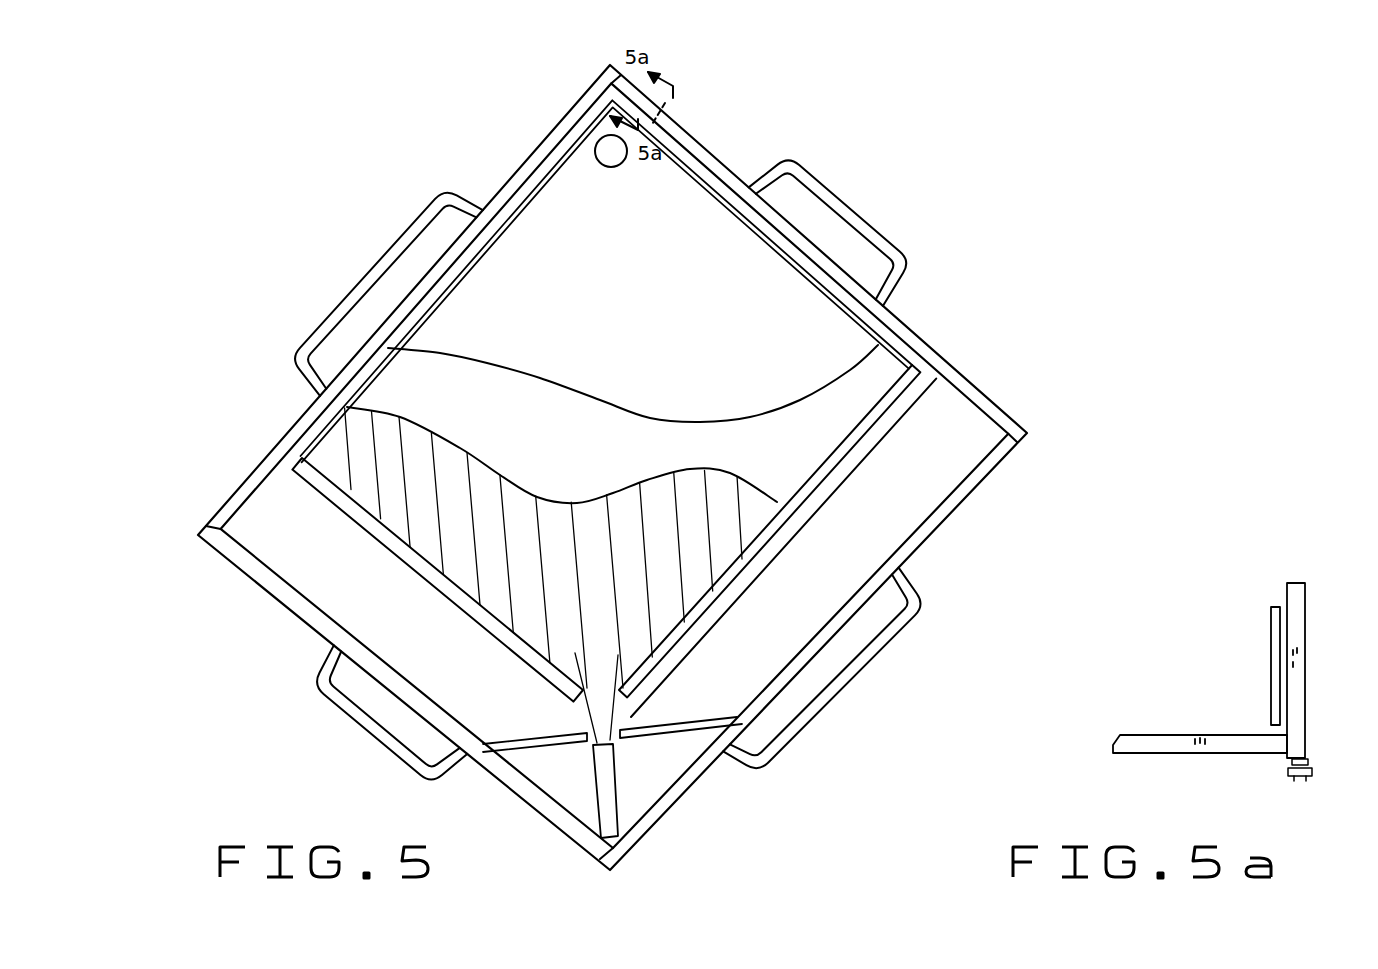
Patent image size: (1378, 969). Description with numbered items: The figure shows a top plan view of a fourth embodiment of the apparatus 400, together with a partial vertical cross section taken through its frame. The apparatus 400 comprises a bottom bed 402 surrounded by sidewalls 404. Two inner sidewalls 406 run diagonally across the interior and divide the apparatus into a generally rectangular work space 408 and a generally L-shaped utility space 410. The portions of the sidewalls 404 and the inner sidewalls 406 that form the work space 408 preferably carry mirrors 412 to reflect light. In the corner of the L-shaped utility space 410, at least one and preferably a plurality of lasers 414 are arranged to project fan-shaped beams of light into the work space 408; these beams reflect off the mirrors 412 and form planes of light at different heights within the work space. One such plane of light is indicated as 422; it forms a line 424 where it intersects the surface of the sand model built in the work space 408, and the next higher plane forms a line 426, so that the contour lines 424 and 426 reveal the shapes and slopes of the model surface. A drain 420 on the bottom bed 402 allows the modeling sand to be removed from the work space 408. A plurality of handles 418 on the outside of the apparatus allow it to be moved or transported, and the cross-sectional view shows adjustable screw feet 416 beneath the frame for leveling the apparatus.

In FIG. 5, the apparatus 400 is at (955, 546).
In FIG. 5, the bottom bed 402 is at (952, 425).
In FIG. 5A, the bottom bed 402 is at (1193, 750).
In FIG. 5, the sidewalls 404 is at (945, 346).
In FIG. 5A, the sidewalls 404 is at (1307, 636).
In FIG. 5, the inner sidewalls 406 is at (785, 520).
In FIG. 5, the work space 408 is at (822, 342).
In FIG. 5, the utility space 410 is at (754, 672).
In FIG. 5, the mirrors 412 is at (690, 165).
In FIG. 5A, the mirrors 412 is at (1274, 668).
In FIG. 5, the lasers 414 is at (613, 797).
In FIG. 5A, the adjustable screw feet 416 is at (1302, 780).
In FIG. 5, the handles 418 is at (408, 222).
In FIG. 5, the drain 420 is at (605, 167).
In FIG. 5, the plane of light 422 is at (347, 446).
In FIG. 5, the line 424 is at (462, 446).
In FIG. 5, the line 426 is at (585, 385).